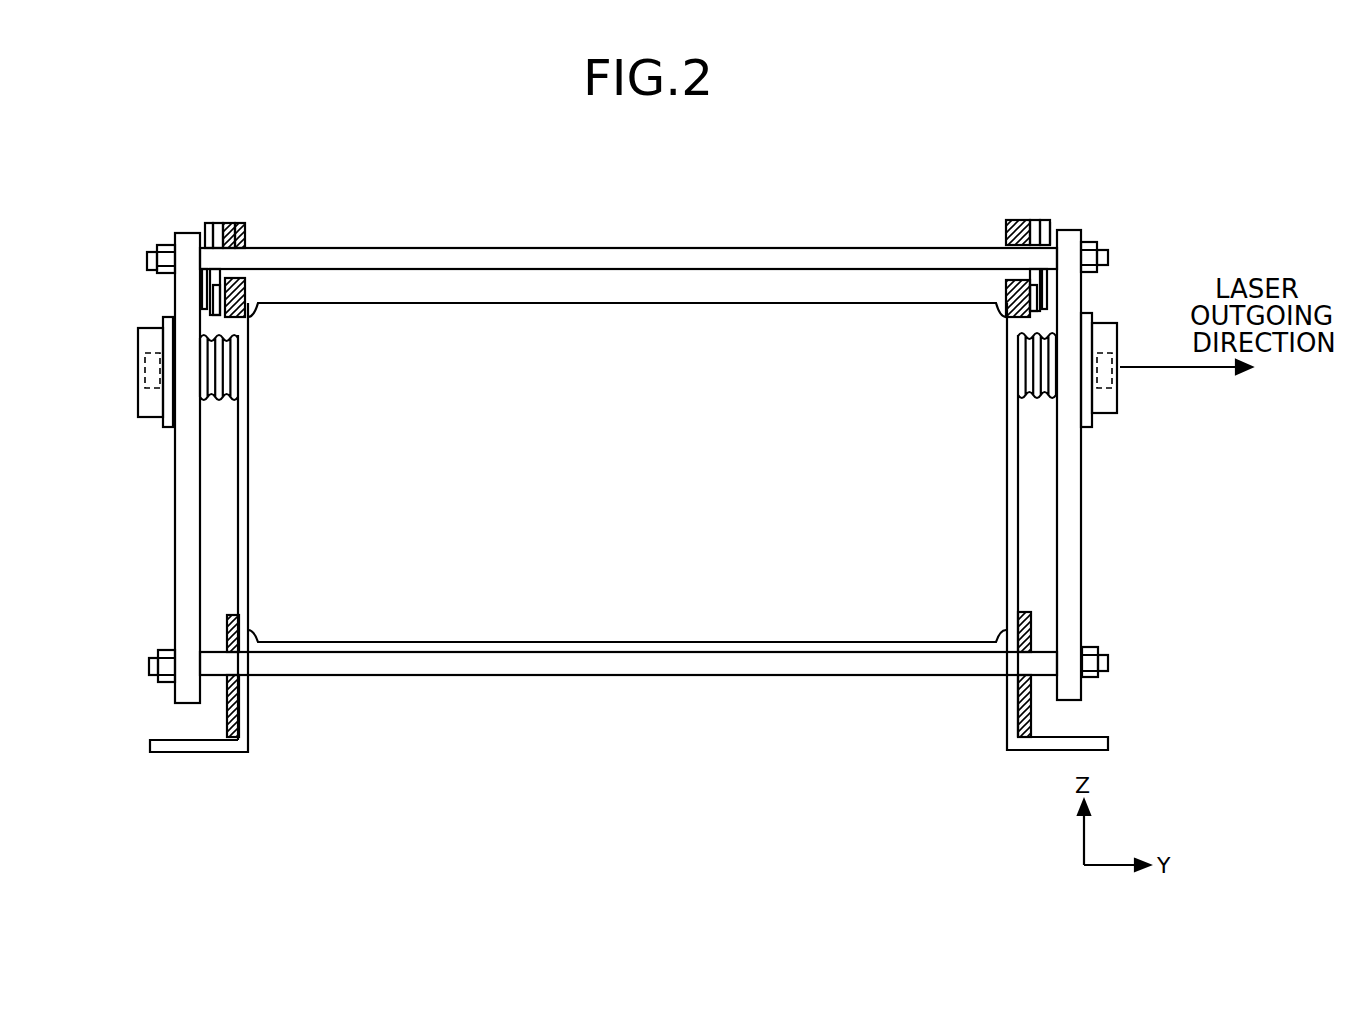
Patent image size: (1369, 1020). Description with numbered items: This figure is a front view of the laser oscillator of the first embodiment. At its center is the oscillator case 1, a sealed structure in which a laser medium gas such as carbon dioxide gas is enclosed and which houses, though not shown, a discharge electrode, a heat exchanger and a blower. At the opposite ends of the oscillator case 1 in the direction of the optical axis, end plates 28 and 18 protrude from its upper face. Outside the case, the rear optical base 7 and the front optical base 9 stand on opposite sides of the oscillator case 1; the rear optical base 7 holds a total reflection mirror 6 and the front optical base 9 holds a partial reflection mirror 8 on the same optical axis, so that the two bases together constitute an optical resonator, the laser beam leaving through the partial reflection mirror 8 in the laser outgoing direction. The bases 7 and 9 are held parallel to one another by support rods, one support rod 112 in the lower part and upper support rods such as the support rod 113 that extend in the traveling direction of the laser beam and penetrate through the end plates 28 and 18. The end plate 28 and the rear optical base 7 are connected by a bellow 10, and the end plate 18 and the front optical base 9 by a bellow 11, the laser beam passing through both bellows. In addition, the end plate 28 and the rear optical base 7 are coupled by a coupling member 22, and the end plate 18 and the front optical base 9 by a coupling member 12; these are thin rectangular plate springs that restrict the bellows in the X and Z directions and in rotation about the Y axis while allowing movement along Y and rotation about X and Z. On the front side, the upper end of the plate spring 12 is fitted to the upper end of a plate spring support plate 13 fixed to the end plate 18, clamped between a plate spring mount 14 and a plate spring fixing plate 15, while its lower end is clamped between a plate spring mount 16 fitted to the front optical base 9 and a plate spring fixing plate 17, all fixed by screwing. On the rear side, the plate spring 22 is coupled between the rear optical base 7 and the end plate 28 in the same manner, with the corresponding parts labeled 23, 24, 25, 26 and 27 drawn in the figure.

The oscillator case 1 is at (633, 303).
The total reflection mirror 6 is at (138, 373).
The rear optical base 7 is at (188, 232).
The partial reflection mirror 8 is at (1117, 380).
The front optical base 9 is at (1068, 234).
The bellow 10 is at (197, 393).
The bellow 11 is at (1045, 398).
The coupling member (plate spring) 12 is at (1045, 219).
The plate spring support plate 13 is at (1025, 220).
The plate spring mount 14 is at (1035, 220).
The plate spring fixing plate 15 is at (1050, 220).
The plate spring mount 16 is at (1041, 298).
The plate spring fixing plate 17 is at (1047, 328).
The end plate 18 is at (1006, 222).
The coupling member (plate spring) 22 is at (218, 224).
The nut 23 is at (246, 228).
The nut 24 is at (231, 223).
The washer 25 is at (209, 225).
The seal member 26 is at (204, 296).
The seal ring 27 is at (216, 326).
The end plate 28 is at (248, 244).
The support rod 112 is at (800, 675).
The support rod 113 is at (815, 248).